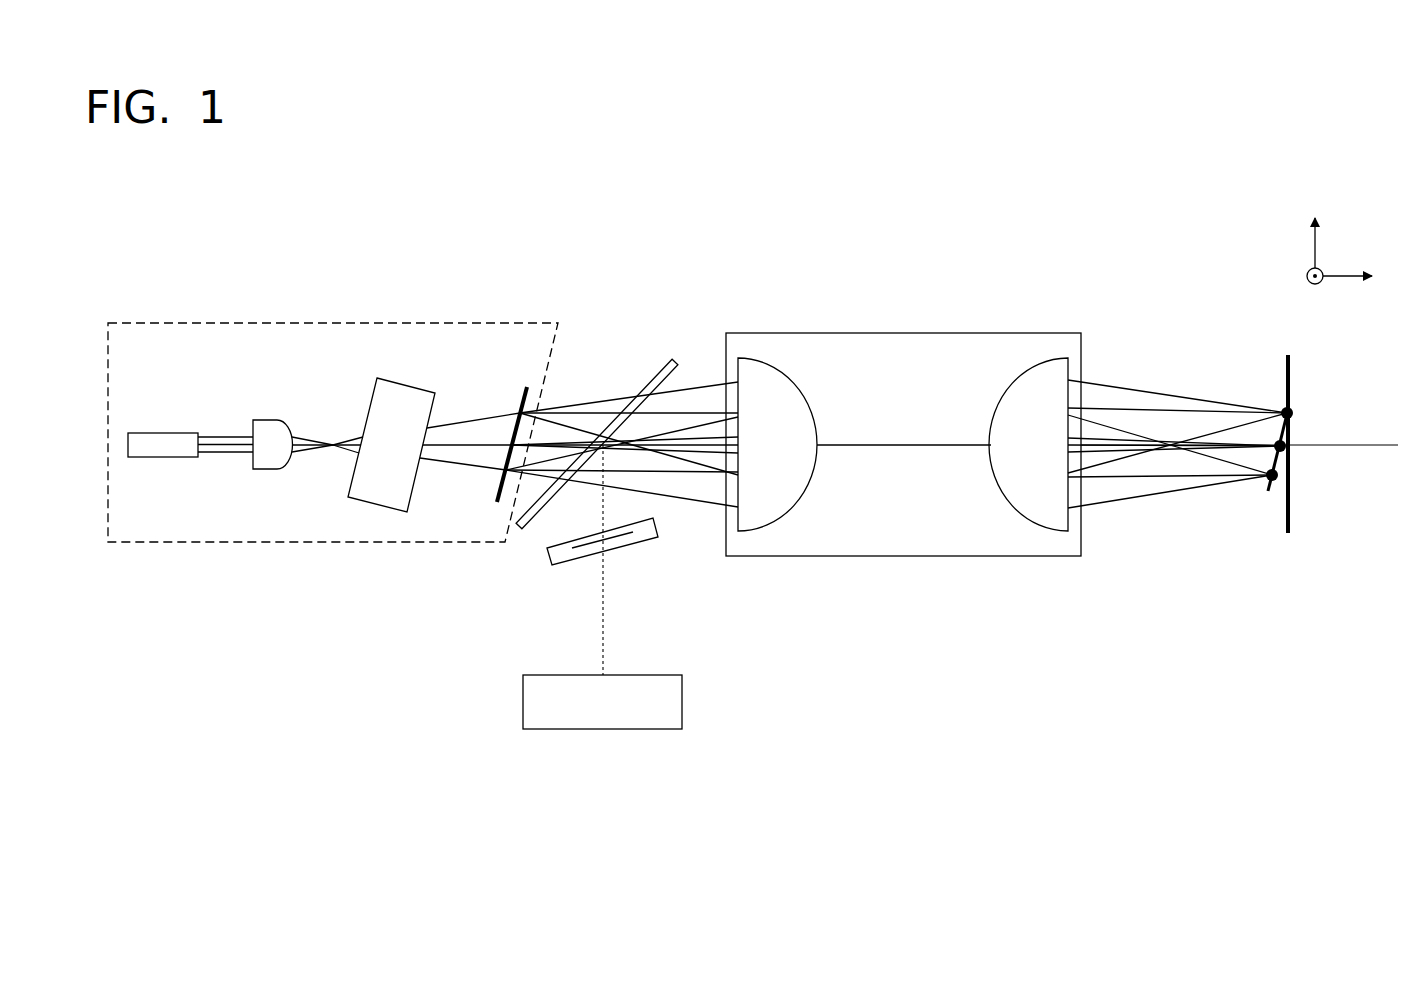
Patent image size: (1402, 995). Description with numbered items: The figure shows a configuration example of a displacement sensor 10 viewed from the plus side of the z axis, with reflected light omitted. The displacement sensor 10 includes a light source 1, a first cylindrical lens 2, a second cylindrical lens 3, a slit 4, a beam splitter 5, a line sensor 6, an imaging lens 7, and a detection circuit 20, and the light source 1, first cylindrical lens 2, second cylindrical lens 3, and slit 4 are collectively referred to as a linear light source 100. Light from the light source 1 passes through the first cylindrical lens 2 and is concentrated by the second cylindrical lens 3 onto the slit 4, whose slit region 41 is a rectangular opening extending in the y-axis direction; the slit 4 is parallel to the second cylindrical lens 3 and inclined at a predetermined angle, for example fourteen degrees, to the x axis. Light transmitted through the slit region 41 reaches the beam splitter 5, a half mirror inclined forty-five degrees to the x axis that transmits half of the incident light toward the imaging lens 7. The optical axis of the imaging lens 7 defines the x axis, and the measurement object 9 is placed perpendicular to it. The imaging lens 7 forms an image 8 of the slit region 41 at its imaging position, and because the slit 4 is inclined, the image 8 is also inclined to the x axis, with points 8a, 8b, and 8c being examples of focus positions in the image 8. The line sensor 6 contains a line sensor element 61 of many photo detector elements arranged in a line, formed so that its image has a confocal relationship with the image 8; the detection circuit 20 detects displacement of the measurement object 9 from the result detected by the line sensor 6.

The light source 1 is at (162, 432).
The first cylindrical lens 2 is at (263, 420).
The second cylindrical lens 3 is at (407, 378).
The slit 4 is at (497, 488).
The slit region 41 is at (520, 396).
The beam splitter 5 is at (660, 370).
The line sensor 6 is at (547, 558).
The line sensor element 61 is at (623, 541).
The imaging lens 7 is at (906, 333).
The image 8 is at (1267, 457).
The point 8a is at (1293, 413).
The point 8b is at (1287, 452).
The point 8c is at (1278, 482).
The measurement object 9 is at (1285, 378).
The displacement sensor 10 is at (1052, 208).
The detection circuit 20 is at (628, 675).
The linear light source 100 is at (436, 323).